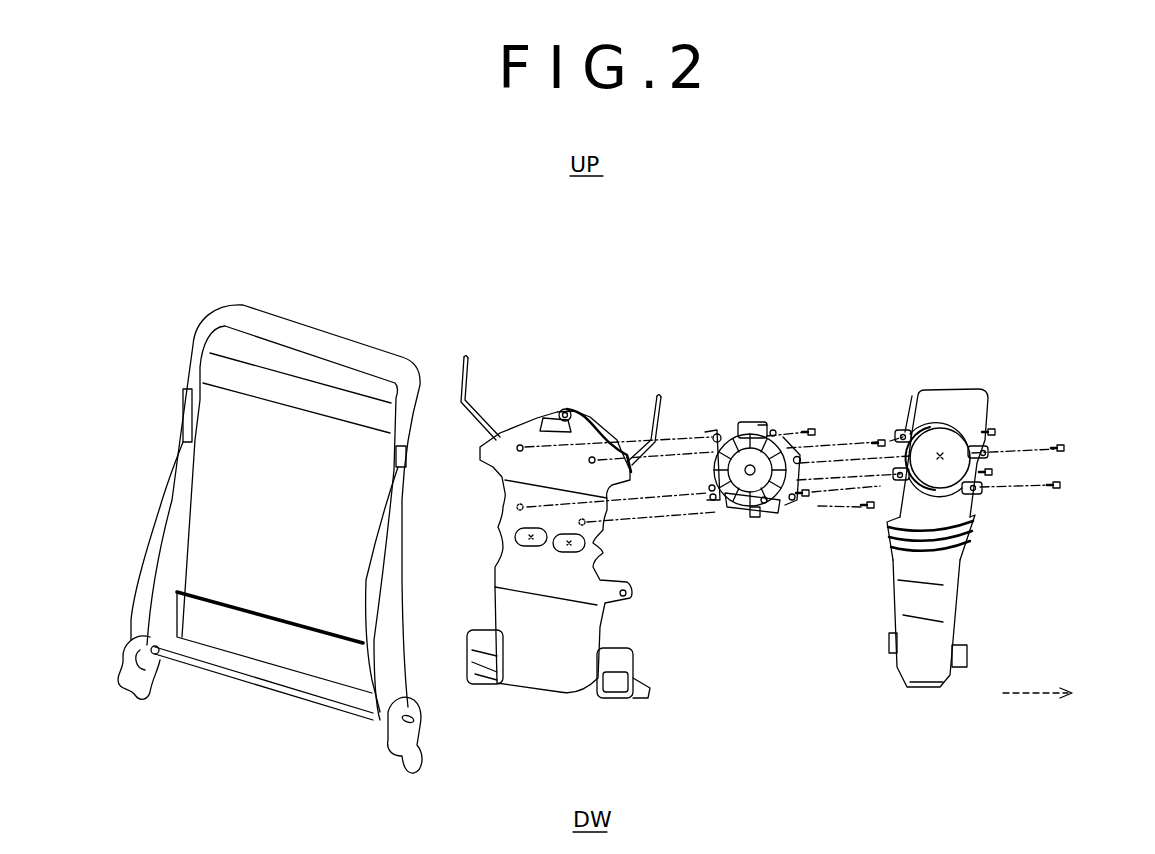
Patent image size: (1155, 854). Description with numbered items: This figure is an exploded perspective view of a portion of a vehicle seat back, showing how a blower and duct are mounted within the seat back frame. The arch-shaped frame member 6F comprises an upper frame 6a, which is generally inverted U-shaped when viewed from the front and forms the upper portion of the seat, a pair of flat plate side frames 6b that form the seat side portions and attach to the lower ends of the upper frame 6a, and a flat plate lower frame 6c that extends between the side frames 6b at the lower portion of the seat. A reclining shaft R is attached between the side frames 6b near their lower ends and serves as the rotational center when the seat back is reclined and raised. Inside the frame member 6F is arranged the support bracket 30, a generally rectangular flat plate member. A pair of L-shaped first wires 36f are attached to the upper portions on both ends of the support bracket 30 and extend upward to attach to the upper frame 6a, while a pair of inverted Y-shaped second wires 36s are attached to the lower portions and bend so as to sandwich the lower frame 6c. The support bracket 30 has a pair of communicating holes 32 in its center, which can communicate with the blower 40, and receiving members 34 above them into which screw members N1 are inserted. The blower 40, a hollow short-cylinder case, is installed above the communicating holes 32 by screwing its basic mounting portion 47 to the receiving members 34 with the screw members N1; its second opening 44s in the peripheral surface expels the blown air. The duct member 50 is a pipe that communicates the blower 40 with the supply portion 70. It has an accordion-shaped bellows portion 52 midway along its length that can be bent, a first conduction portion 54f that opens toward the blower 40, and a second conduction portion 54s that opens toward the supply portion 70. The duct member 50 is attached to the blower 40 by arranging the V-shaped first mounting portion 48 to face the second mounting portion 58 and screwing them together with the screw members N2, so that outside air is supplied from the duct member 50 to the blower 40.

The frame member 6F is at (306, 318).
The upper frame 6a is at (356, 347).
The side frames 6b is at (180, 408).
The lower frame 6c is at (275, 640).
The reclining shaft R is at (318, 704).
The support bracket 30 is at (578, 418).
The first wires 36f is at (468, 377).
The second wires 36s is at (467, 640).
The receiving members 34 is at (520, 451).
The communicating holes 32 is at (531, 547).
The blower 40 is at (775, 427).
The basic mounting portion 47 is at (718, 434).
The first mounting portion 48 is at (703, 488).
The screw members N1 is at (820, 428).
The second opening 44s is at (740, 510).
The duct member 50 is at (958, 383).
The second mounting portion 58 is at (903, 430).
The screw members N2 is at (998, 427).
The bellows portion 52 is at (970, 543).
The first conduction portion 54f is at (947, 470).
The second conduction portion 54s is at (948, 682).
The supply portion 70 is at (1066, 693).